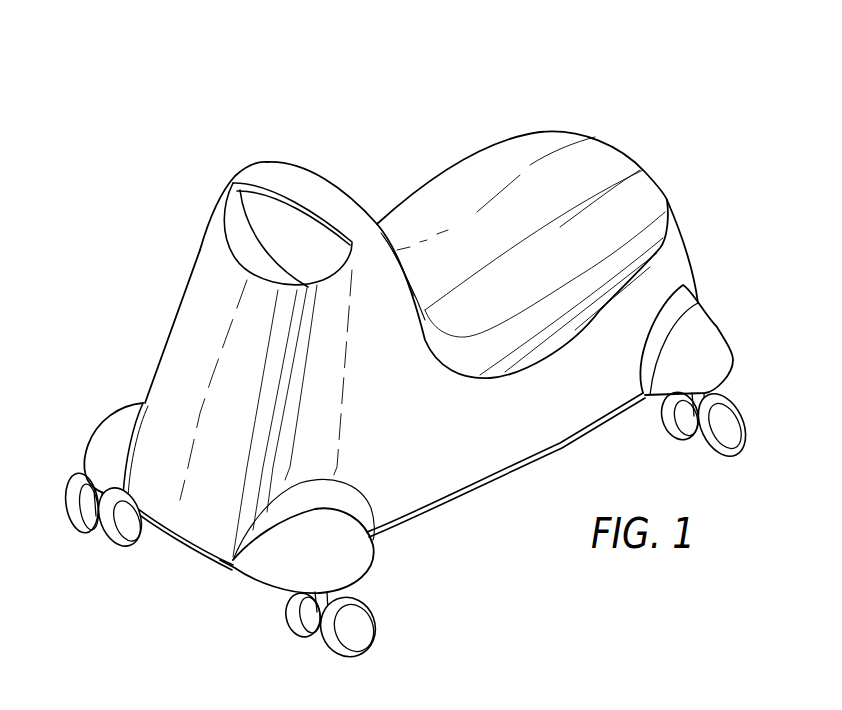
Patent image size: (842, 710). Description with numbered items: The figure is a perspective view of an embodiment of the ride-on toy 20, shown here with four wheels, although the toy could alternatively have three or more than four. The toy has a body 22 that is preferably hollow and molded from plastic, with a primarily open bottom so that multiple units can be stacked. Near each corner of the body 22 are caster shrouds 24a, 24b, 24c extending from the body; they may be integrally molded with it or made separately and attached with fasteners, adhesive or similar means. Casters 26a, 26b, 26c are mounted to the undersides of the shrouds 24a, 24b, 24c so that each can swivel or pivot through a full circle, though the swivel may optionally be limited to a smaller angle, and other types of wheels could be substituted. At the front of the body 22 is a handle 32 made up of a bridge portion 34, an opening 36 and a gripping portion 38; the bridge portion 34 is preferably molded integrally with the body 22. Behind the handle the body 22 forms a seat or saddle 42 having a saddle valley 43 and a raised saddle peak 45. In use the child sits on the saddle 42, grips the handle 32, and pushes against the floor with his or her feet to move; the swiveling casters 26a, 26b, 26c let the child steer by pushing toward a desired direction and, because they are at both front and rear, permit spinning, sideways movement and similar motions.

The ride-on toy 20 is at (228, 75).
The body 22 is at (120, 319).
The caster shroud 24a is at (103, 432).
The caster shroud 24b is at (367, 552).
The caster shroud 24c is at (713, 343).
The caster 26a is at (68, 507).
The caster 26b is at (280, 615).
The caster 26c is at (750, 420).
The handle 32 is at (216, 160).
The bridge portion 34 is at (277, 170).
The opening 36 is at (230, 257).
The gripping portion 38 is at (317, 219).
The seat or saddle 42 is at (515, 122).
The saddle valley 43 is at (433, 207).
The saddle peak 45 is at (590, 157).